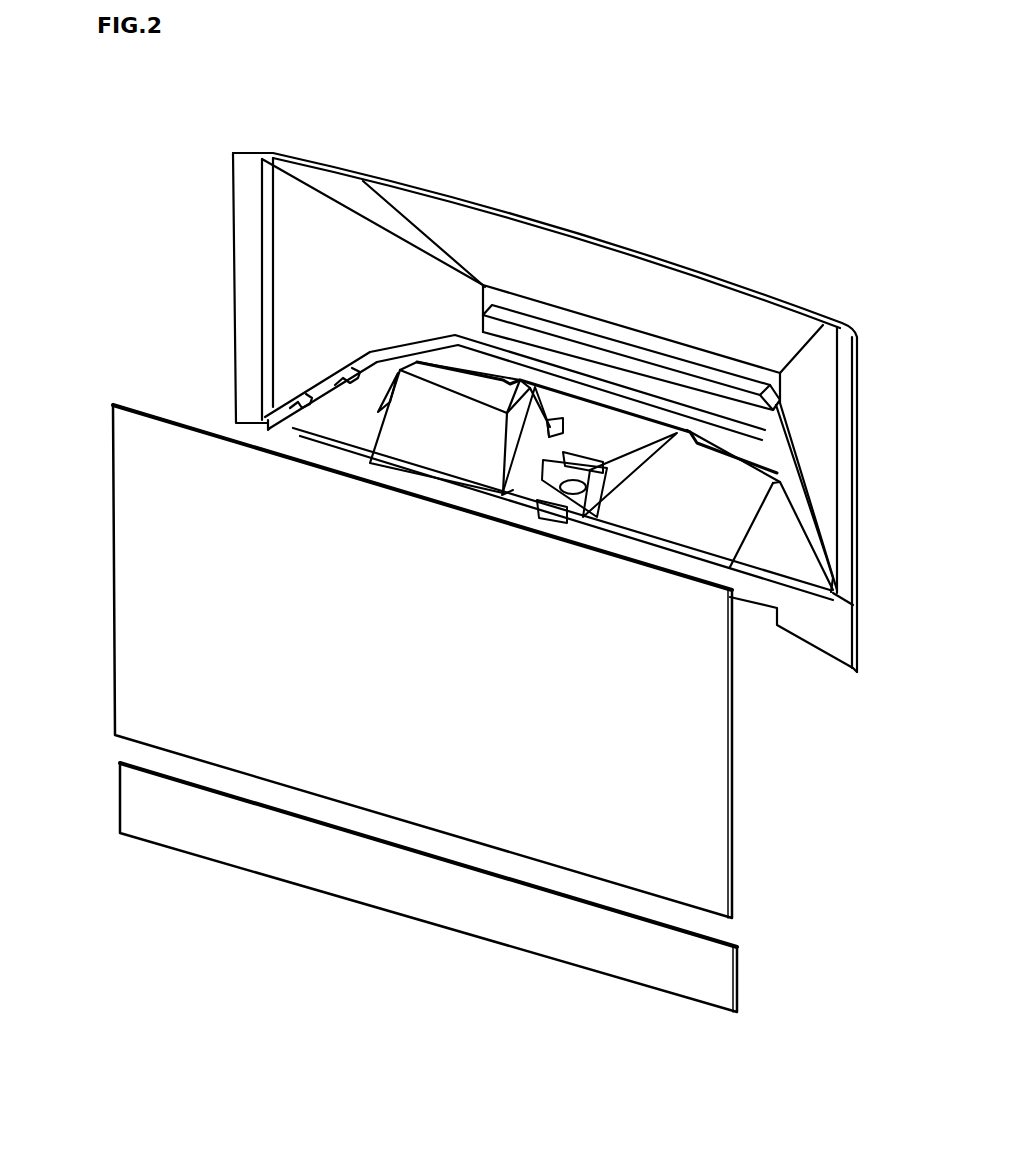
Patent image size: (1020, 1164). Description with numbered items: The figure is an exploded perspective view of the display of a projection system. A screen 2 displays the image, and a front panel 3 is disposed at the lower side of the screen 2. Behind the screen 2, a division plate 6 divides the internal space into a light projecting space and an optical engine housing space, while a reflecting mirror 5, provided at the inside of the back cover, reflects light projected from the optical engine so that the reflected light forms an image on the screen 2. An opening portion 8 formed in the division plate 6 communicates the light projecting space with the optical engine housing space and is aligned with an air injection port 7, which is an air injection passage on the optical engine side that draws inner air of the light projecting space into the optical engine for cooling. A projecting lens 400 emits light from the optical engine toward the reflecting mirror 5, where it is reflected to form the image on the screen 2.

The screen 2 is at (127, 455).
The front panel 3 is at (223, 845).
The reflecting mirror 5 is at (608, 267).
The division plate 6 is at (723, 518).
The air injection port 7 is at (543, 433).
The opening portion 8 is at (557, 418).
The projecting lens 400 is at (610, 490).